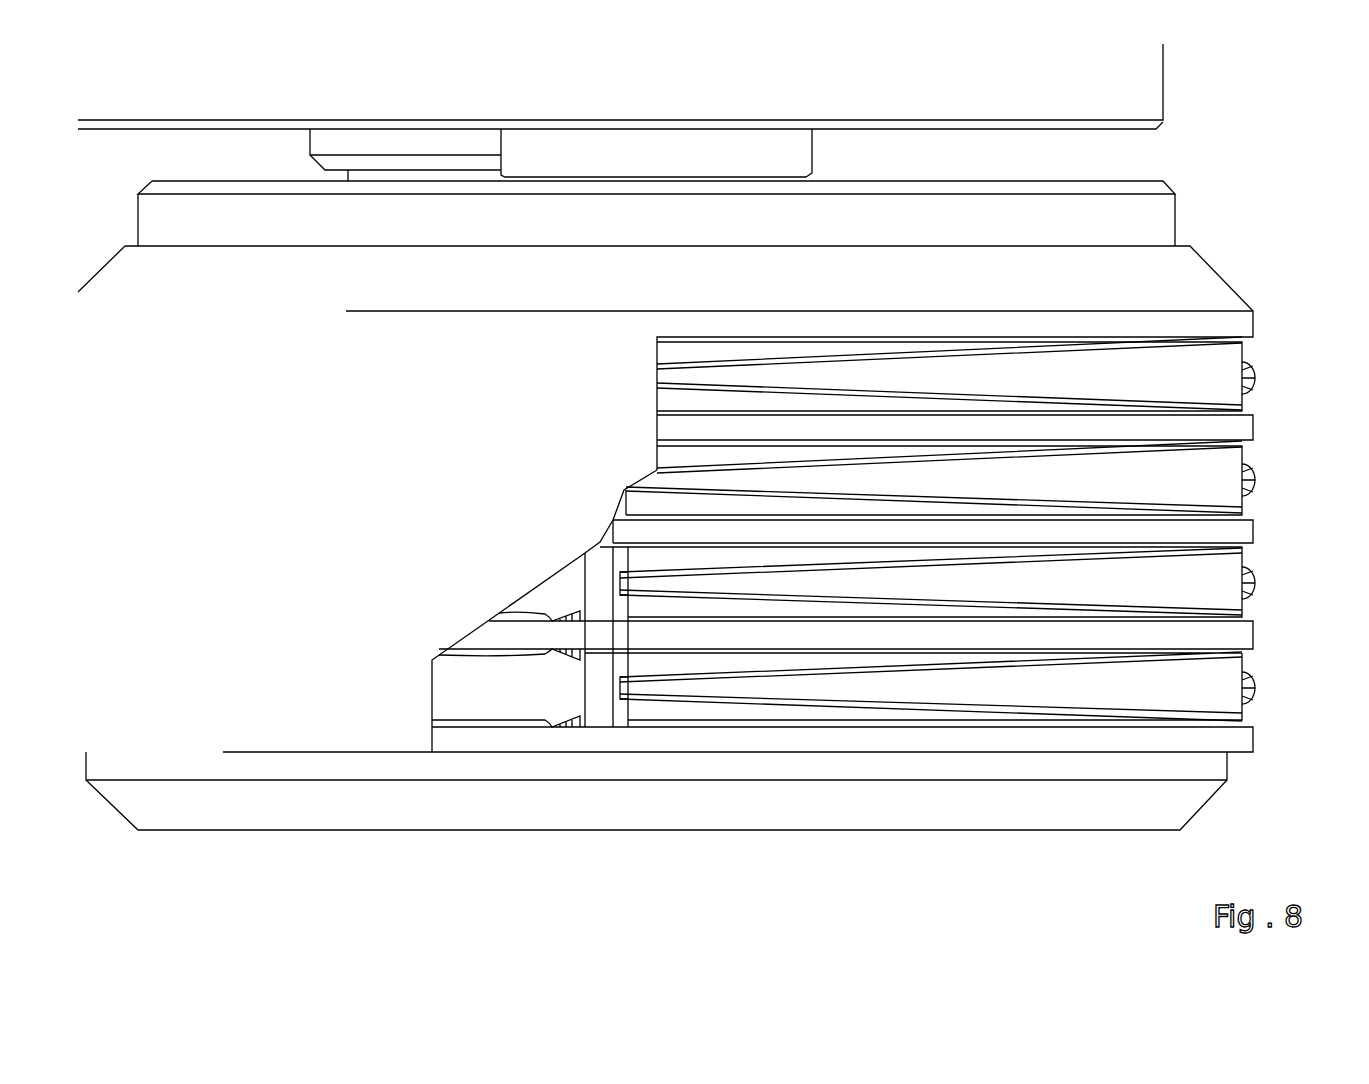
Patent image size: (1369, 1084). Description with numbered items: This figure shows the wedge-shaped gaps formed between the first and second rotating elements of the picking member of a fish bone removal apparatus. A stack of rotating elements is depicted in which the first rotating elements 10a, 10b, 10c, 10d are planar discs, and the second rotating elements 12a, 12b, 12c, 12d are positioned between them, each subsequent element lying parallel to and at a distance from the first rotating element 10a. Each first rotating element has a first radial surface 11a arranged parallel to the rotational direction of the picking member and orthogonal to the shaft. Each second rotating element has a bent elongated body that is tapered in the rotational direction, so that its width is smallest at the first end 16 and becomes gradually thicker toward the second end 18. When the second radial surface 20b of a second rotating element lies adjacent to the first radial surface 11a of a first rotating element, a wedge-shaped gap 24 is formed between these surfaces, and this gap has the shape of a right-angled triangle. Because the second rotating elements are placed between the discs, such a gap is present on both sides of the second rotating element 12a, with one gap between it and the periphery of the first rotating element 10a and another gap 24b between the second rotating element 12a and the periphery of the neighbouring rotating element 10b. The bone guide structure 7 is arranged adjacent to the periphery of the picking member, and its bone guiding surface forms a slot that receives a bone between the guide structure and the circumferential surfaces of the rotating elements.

The bone guide structure 7 is at (283, 695).
The first rotating element 10a is at (1243, 737).
The first rotating element 10b is at (1242, 632).
The first rotating element 10c is at (1242, 530).
The first rotating element 10d is at (1240, 428).
The second rotating element 12a is at (894, 793).
The second rotating element 12b is at (1223, 565).
The second rotating element 12c is at (1223, 462).
The second rotating element 12d is at (1230, 355).
The first end 16 is at (667, 683).
The second end 18 is at (1230, 710).
The second radial surface 20b is at (898, 710).
The wedge-shaped gap 24 is at (708, 710).
The wedge-shaped gap 24b is at (733, 657).
The first radial surface 11a is at (858, 723).